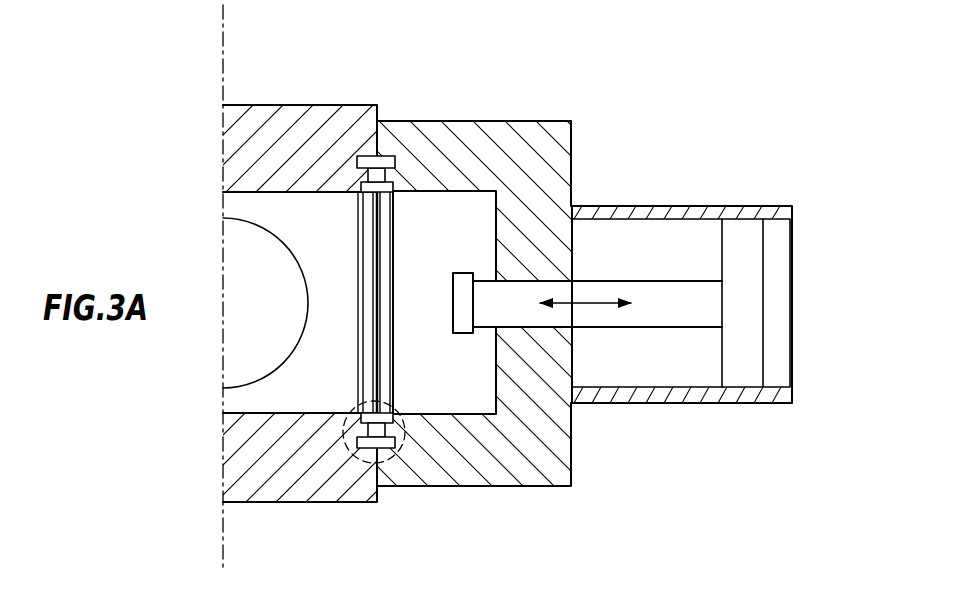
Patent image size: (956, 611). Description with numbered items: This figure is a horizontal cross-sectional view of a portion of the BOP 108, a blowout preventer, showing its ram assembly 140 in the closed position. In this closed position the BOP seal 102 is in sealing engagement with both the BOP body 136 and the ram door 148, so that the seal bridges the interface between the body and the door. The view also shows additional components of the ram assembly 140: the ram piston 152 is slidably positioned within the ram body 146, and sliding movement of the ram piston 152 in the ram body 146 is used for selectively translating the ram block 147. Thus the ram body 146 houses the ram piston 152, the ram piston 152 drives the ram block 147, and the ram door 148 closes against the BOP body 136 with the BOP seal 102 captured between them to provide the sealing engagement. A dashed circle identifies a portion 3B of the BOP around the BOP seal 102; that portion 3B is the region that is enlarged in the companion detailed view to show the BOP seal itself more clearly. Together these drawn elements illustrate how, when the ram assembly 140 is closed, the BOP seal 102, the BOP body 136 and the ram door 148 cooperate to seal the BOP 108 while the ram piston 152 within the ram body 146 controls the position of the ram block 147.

The BOP 108 is at (322, 76).
The BOP body 136 is at (303, 506).
The ram door 148 is at (541, 490).
The ram block 147 is at (458, 215).
The BOP seal 102 is at (389, 152).
The ram body 146 is at (719, 407).
The ram assembly 140 is at (630, 125).
The ram piston 152 is at (686, 277).
The portion 3B is at (392, 455).